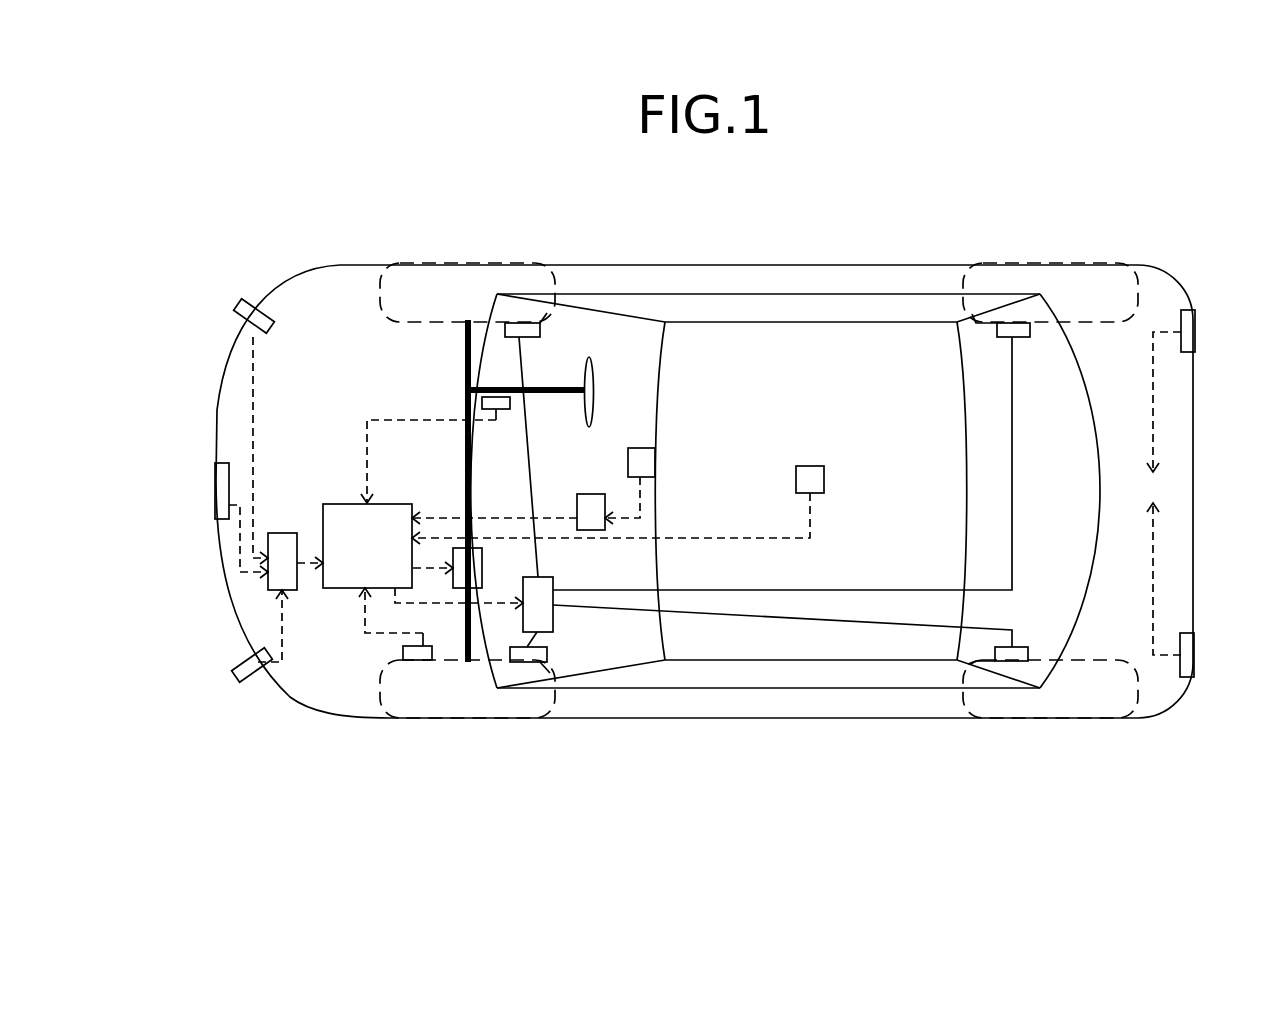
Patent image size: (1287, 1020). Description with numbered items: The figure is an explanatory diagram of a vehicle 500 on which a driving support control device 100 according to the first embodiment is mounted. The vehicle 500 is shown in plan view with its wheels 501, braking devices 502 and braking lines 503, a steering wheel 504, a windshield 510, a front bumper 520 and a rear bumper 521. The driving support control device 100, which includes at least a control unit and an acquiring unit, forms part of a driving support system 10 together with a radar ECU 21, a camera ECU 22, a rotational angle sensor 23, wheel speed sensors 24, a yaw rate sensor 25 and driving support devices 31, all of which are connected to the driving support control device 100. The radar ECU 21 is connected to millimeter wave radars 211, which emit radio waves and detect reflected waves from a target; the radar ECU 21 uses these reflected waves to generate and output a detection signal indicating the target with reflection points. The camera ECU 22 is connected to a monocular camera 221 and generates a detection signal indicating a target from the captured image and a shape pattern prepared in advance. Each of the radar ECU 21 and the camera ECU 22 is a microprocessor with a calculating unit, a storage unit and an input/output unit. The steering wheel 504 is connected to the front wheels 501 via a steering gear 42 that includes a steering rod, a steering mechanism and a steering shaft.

The driving support system 10 is at (325, 680).
The driving support control device 100 is at (367, 546).
The radar ECU 21 is at (1173, 492).
The millimeter wave radar 211 is at (255, 302).
The camera ECU 22 is at (509, 512).
The monocular camera 221 is at (655, 460).
The rotational angle sensor 23 is at (505, 400).
The wheel speed sensor 24 is at (403, 653).
The yaw rate sensor 25 is at (618, 505).
The driving support device 31 is at (474, 590).
The steering gear 42 is at (468, 406).
The vehicle 500 is at (783, 258).
The wheel 501 is at (462, 262).
The braking device 502 is at (520, 327).
The braking line 503 is at (528, 462).
The steering wheel 504 is at (593, 390).
The windshield 510 is at (650, 424).
The front bumper 520 is at (228, 362).
The rear bumper 521 is at (1195, 478).